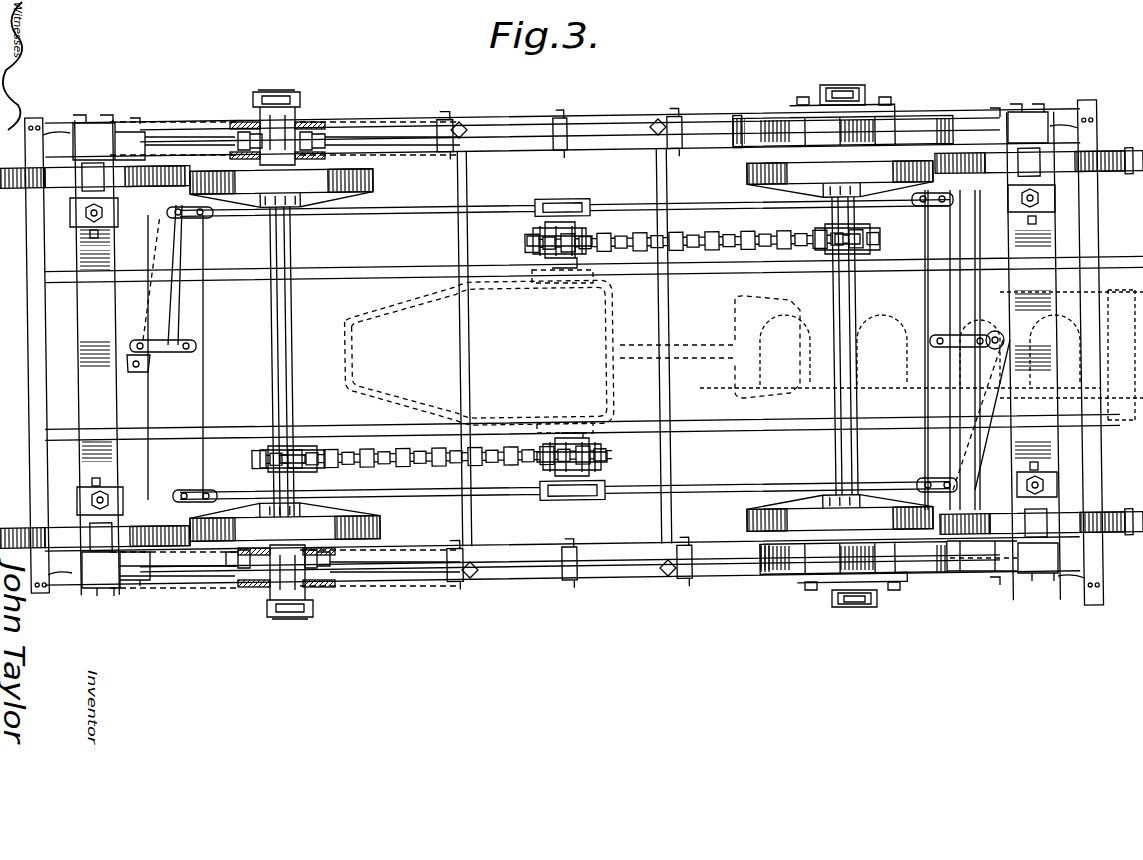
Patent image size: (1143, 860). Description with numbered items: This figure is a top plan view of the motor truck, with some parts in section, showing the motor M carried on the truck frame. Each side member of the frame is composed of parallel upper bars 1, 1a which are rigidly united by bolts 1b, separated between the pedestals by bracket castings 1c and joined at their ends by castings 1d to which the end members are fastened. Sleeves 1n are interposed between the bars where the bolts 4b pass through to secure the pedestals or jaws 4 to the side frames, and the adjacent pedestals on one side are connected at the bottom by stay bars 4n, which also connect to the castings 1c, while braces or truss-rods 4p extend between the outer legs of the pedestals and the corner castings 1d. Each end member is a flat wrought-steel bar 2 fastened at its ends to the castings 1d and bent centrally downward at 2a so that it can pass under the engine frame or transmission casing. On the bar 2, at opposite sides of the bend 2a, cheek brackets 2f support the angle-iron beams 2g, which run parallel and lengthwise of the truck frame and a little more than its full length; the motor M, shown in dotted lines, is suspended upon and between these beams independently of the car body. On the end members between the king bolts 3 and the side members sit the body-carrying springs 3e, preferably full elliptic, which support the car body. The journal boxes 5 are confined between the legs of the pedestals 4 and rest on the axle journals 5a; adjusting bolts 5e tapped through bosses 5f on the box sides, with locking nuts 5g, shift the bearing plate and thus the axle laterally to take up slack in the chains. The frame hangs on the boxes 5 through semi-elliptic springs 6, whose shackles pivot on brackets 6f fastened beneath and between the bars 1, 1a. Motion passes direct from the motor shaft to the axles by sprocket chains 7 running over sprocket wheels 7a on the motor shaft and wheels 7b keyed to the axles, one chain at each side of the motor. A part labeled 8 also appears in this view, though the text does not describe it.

The upper bar 1 is at (503, 100).
The upper bar 1a is at (534, 545).
The bolt 1b is at (560, 118).
The bracket casting 1c is at (565, 138).
The end casting 1d is at (97, 143).
The sleeve 1n is at (800, 130).
The end bar 2 is at (80, 288).
The central bend 2a is at (1052, 358).
The cheek bracket 2f is at (80, 240).
The angle-iron beam 2g is at (352, 268).
The king bolt 3 is at (88, 212).
The body carrying spring 3e is at (1110, 195).
The pedestal 4 is at (360, 170).
The bolt 4b is at (893, 604).
The stay bar 4n is at (385, 138).
The brace 4p is at (172, 140).
The journal box 5 is at (285, 92).
The axle journal 5a is at (292, 233).
The adjusting bolt 5e is at (320, 138).
The boss 5f is at (250, 122).
The locking nut 5g is at (310, 122).
The semi-elliptic spring 6 is at (870, 142).
The bracket 6f is at (738, 128).
The sprocket chain 7 is at (697, 217).
The sprocket wheel 7a is at (612, 472).
The sprocket wheel 7b is at (225, 472).
The bracket 8 is at (722, 575).
The motor M is at (545, 257).